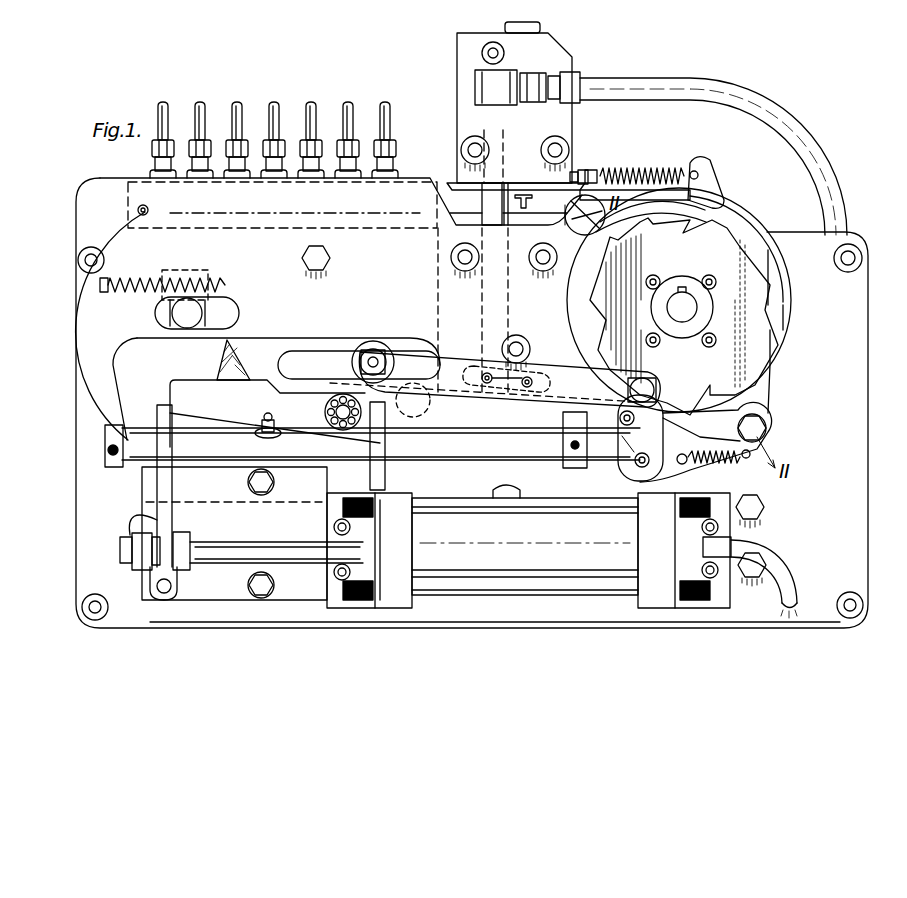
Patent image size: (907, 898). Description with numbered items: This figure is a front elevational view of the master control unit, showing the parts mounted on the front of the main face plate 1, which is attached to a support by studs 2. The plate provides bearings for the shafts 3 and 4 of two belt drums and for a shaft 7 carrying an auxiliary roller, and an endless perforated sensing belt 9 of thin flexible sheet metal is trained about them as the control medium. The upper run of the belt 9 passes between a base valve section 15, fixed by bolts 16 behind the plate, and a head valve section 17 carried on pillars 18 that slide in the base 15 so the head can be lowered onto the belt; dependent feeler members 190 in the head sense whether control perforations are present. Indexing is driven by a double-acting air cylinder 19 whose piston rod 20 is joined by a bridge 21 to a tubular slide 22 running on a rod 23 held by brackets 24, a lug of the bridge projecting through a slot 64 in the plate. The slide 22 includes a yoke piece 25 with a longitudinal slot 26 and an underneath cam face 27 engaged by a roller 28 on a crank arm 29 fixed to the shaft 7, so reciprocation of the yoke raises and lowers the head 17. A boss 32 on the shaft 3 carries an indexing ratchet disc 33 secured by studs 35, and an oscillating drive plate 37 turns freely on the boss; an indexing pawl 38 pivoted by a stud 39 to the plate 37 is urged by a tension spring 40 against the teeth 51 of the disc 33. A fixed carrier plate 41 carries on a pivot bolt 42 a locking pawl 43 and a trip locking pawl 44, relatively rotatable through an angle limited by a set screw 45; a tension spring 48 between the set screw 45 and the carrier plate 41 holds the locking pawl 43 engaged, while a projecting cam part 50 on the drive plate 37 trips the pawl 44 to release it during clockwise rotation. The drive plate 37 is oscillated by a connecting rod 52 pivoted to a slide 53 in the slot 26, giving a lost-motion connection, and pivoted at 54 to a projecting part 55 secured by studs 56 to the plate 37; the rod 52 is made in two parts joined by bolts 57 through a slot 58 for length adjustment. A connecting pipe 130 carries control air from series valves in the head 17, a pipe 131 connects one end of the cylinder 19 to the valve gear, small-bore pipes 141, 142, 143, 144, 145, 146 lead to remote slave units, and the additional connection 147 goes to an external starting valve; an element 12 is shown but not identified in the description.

The main face plate 1 is at (858, 472).
The studs 2 is at (92, 250).
The shaft 3 is at (686, 310).
The shaft 4 is at (190, 313).
The shaft 7 is at (410, 400).
The endless perforated sensing belt 9 is at (478, 211).
The bushing 12 is at (205, 322).
The base valve assembly 15 is at (531, 226).
The bolts 16 is at (462, 268).
The head valve assembly 17 is at (566, 52).
The pillars 18 is at (492, 196).
The double-acting air operating cylinder 19 is at (520, 554).
The piston rod 20 is at (250, 544).
The bridge 21 is at (162, 515).
The tubular slide 22 is at (224, 448).
The rod 23 is at (388, 448).
The brackets 24 is at (113, 464).
The yoke piece 25 is at (268, 343).
The longitudinal slot 26 is at (293, 353).
The underneath cam face 27 is at (280, 388).
The roller 28 is at (360, 398).
The crank arm 29 is at (379, 348).
The boss 32 is at (700, 328).
The indexing ratchet disc 33 is at (733, 270).
The studs 35 is at (646, 338).
The oscillating drive plate 37 is at (766, 404).
The indexing pawl 38 is at (722, 427).
The stud 39 is at (758, 436).
The tension spring 40 is at (743, 451).
The fixed carrier plate 41 is at (708, 163).
The pivot bolt 42 is at (583, 228).
The pivoted locking pawl 43 is at (636, 193).
The trip locking pawl 44 is at (646, 286).
The set screw 45 is at (588, 183).
The tension spring 48 is at (612, 190).
The projecting cam part 50 is at (668, 197).
The teeth 51 is at (770, 363).
The connecting rod 52 is at (538, 393).
The slide 53 is at (341, 352).
The pivot 54 is at (632, 386).
The projecting part 55 is at (624, 442).
The studs 56 is at (626, 424).
The bolts 57 is at (486, 384).
The slot 58 is at (506, 375).
The slot 64 is at (140, 528).
The connecting pipe 130 is at (612, 76).
The pipe 131 is at (790, 557).
The connecting pipe 141 is at (347, 102).
The connecting pipe 142 is at (310, 102).
The connecting pipe 143 is at (273, 102).
The connecting pipe 144 is at (236, 102).
The connecting pipe 145 is at (199, 102).
The connecting pipe 146 is at (160, 102).
The additional connection 147 is at (384, 102).
The dependent feeler member 190 is at (538, 195).